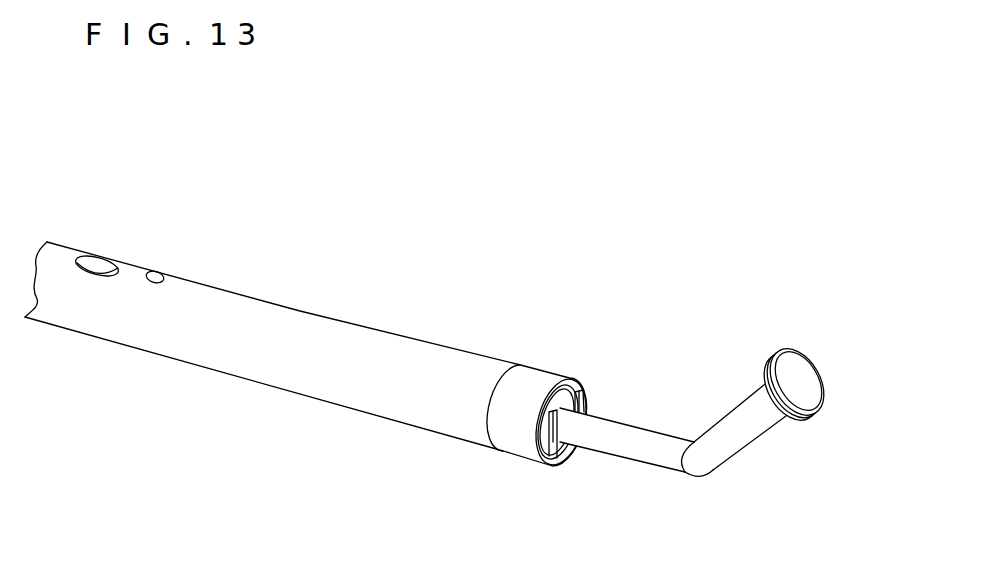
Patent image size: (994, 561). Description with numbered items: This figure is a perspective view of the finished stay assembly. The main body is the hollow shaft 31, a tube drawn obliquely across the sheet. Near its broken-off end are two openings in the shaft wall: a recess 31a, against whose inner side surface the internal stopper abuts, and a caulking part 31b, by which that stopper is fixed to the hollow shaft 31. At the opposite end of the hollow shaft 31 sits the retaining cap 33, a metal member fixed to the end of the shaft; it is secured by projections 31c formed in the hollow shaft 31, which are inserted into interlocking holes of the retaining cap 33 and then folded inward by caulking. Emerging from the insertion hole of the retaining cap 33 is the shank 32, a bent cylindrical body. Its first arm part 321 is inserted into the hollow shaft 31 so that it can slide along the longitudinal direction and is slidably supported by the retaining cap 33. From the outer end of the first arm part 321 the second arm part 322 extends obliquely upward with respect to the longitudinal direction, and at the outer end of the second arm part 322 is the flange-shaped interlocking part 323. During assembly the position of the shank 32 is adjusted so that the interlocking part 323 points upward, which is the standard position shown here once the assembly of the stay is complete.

The hollow shaft 31 is at (277, 322).
The recess 31a is at (96, 261).
The caulking part 31b is at (154, 272).
The projections 31c is at (583, 390).
The retaining cap 33 is at (536, 380).
The shank 32 is at (697, 421).
The first arm part 321 is at (638, 452).
The second arm part 322 is at (753, 422).
The interlocking part 323 is at (790, 370).